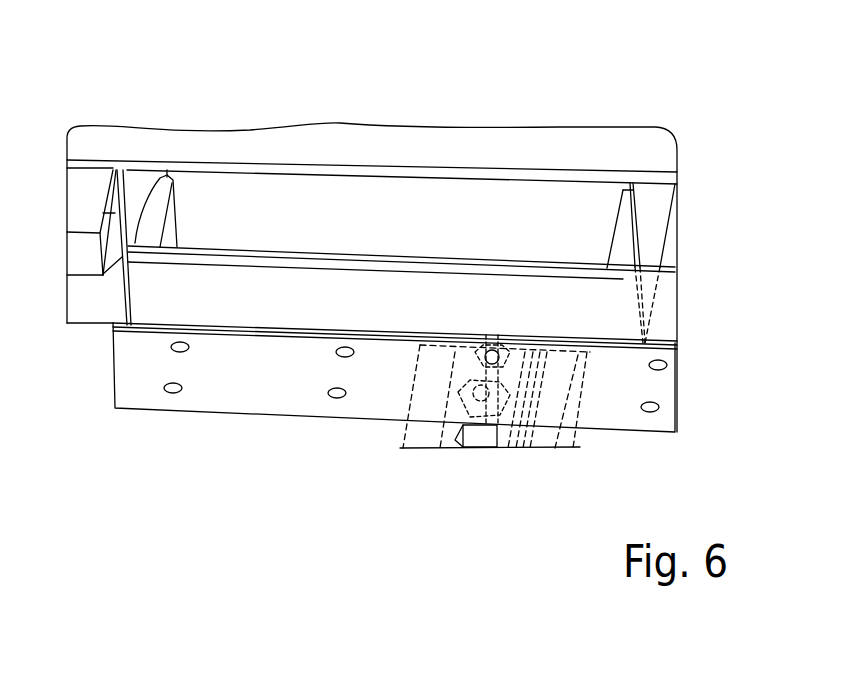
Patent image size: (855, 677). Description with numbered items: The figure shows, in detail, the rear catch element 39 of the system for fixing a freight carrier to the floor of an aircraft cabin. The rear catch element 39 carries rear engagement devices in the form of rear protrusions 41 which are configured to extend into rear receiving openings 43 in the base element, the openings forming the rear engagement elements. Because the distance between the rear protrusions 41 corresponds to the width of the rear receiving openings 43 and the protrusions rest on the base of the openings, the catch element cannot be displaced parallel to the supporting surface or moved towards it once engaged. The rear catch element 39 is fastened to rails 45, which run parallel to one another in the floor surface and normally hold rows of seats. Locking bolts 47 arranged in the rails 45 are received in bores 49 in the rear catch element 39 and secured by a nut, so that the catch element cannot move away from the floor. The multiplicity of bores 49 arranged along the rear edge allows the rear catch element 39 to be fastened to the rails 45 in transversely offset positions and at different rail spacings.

The rear catch element 39 is at (212, 397).
The rear protrusions 41 is at (617, 242).
The rear receiving openings 43 is at (390, 228).
The rails 45 is at (540, 435).
The locking bolts 47 is at (490, 348).
The bores 49 is at (337, 352).